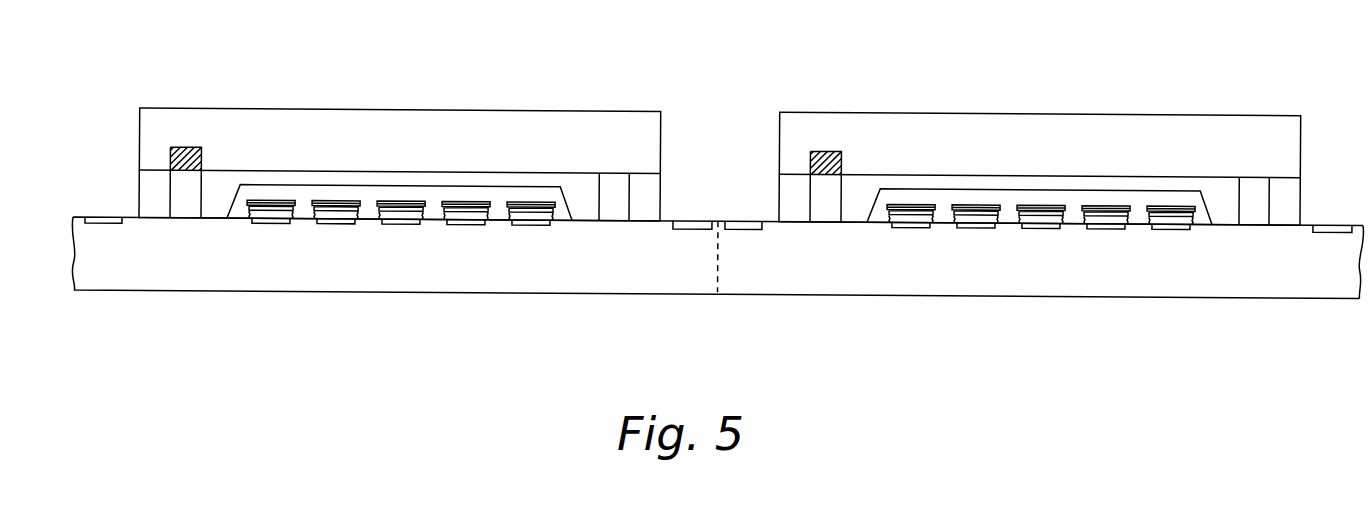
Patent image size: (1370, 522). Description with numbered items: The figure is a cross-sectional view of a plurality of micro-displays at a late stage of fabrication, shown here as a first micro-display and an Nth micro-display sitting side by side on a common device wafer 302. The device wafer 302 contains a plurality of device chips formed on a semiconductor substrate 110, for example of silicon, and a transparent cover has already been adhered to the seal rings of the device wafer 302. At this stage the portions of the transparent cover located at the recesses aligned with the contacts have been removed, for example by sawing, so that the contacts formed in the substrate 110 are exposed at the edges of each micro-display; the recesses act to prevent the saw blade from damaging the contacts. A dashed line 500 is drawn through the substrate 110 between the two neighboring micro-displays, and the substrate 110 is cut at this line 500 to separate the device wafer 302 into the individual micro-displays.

The semiconductor substrate 110 is at (1049, 273).
The line 500 is at (716, 272).
The device wafer 302 is at (718, 208).